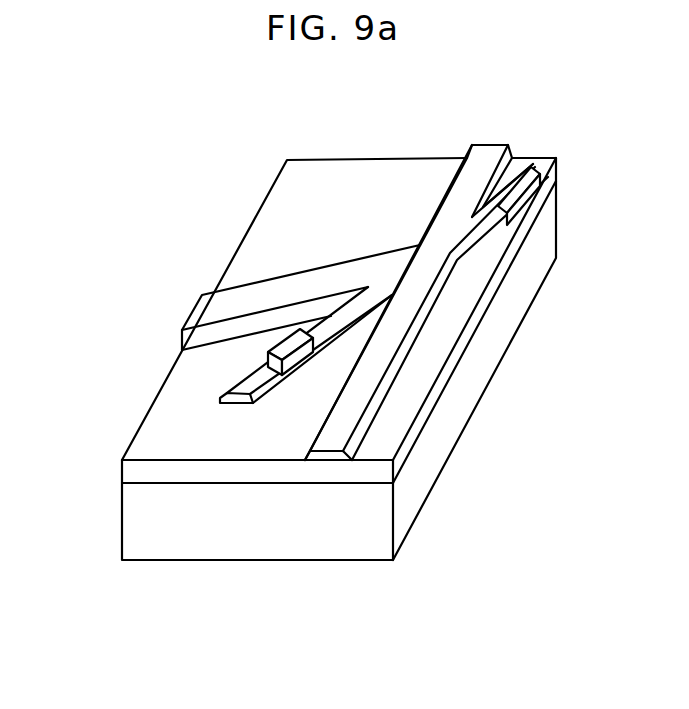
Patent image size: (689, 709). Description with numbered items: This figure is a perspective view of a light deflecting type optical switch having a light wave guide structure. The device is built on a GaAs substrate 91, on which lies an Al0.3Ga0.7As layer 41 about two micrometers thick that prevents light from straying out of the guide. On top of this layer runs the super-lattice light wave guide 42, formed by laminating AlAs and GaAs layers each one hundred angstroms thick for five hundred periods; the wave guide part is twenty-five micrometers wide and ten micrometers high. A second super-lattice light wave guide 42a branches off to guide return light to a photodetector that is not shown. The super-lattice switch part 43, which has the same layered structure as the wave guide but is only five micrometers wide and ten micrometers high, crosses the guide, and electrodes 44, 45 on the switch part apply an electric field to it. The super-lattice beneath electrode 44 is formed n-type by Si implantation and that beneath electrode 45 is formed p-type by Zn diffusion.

The GaAs substrate 91 is at (213, 543).
The Al0.3Ga0.7As layer 41 is at (128, 474).
The super-lattice light wave guide 42 is at (327, 424).
The super-lattice light wave guide 42a is at (232, 313).
The super-lattice switch part 43 is at (222, 400).
The electrode 44 is at (532, 162).
The electrode 45 is at (260, 362).